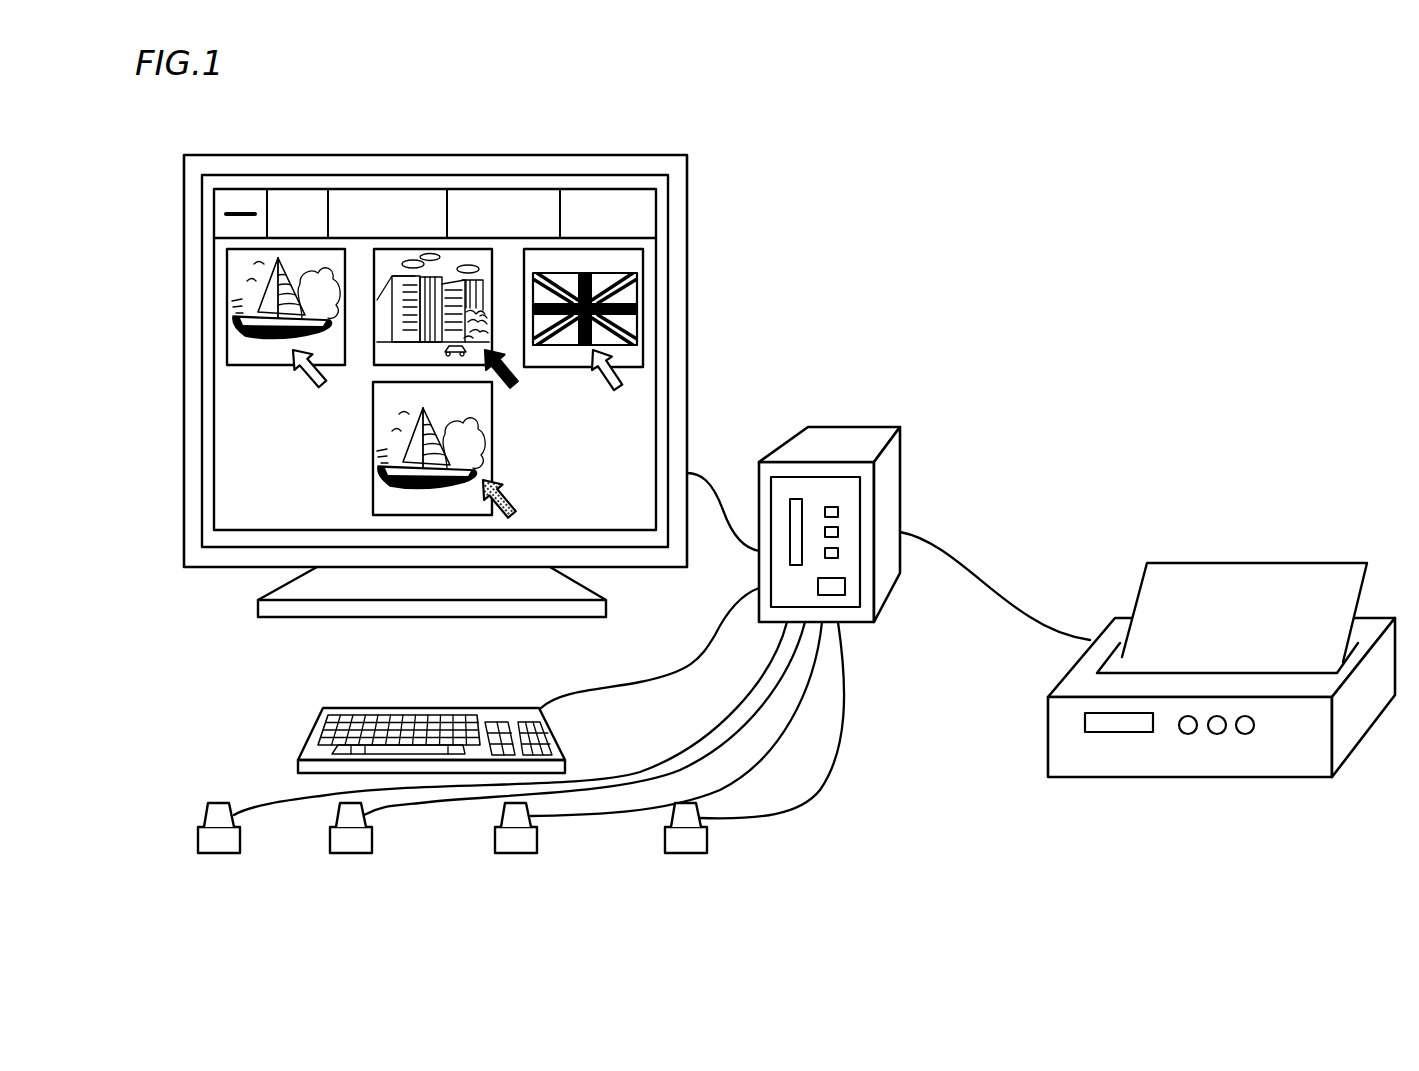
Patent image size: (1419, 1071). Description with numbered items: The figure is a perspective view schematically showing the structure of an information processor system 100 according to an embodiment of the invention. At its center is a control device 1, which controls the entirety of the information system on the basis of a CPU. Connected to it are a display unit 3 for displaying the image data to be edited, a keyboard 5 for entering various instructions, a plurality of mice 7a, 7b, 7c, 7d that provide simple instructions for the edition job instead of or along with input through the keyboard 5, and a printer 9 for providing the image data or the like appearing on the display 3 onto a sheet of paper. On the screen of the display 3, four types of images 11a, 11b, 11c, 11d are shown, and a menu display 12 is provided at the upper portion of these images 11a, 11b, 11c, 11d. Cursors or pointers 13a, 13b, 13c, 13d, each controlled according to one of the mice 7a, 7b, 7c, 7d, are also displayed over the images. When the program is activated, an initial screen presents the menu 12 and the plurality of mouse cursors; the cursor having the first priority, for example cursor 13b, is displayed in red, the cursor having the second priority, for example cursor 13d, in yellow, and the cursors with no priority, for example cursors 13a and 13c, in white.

The image processing system 100 is at (1089, 202).
The control device 1 is at (892, 470).
The display unit 3 is at (593, 163).
The keyboard 5 is at (320, 724).
The mouse 7a is at (218, 855).
The mouse 7b is at (351, 855).
The mouse 7c is at (516, 855).
The mouse 7d is at (686, 855).
The printer 9 is at (1372, 627).
The image 11a is at (328, 252).
The image 11b is at (446, 253).
The image 11c is at (557, 258).
The image 11d is at (385, 499).
The menu display 12 is at (636, 203).
The cursor 13a is at (320, 390).
The cursor 13b is at (515, 390).
The cursor 13c is at (620, 394).
The cursor 13d is at (510, 500).